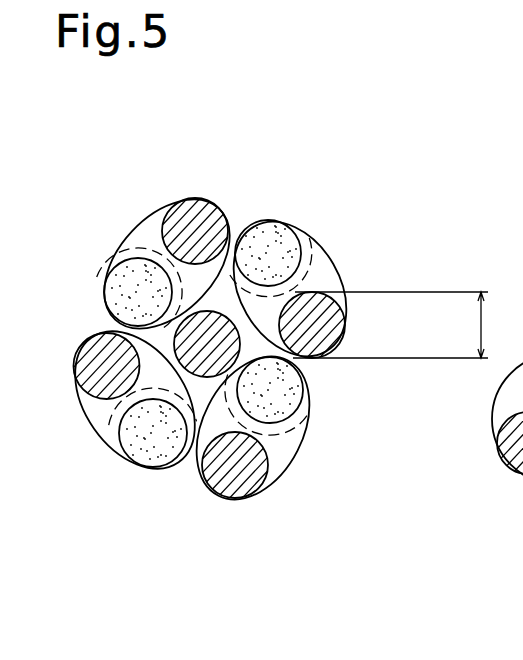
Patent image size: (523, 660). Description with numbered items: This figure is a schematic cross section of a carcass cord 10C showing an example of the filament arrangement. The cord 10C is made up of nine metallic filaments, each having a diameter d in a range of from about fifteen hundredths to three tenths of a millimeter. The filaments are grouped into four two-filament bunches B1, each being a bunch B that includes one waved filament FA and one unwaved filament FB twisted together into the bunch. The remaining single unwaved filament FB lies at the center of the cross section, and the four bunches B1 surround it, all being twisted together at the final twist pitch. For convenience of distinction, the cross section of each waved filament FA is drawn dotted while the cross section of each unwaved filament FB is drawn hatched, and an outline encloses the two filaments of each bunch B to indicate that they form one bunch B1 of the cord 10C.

The metallic cord 10C is at (357, 194).
The bunch B is at (130, 225).
The two-filament bunch B1 is at (455, 581).
The unwaved filament FB is at (205, 335).
The waved filament FA is at (292, 403).
The filament diameter d is at (391, 325).